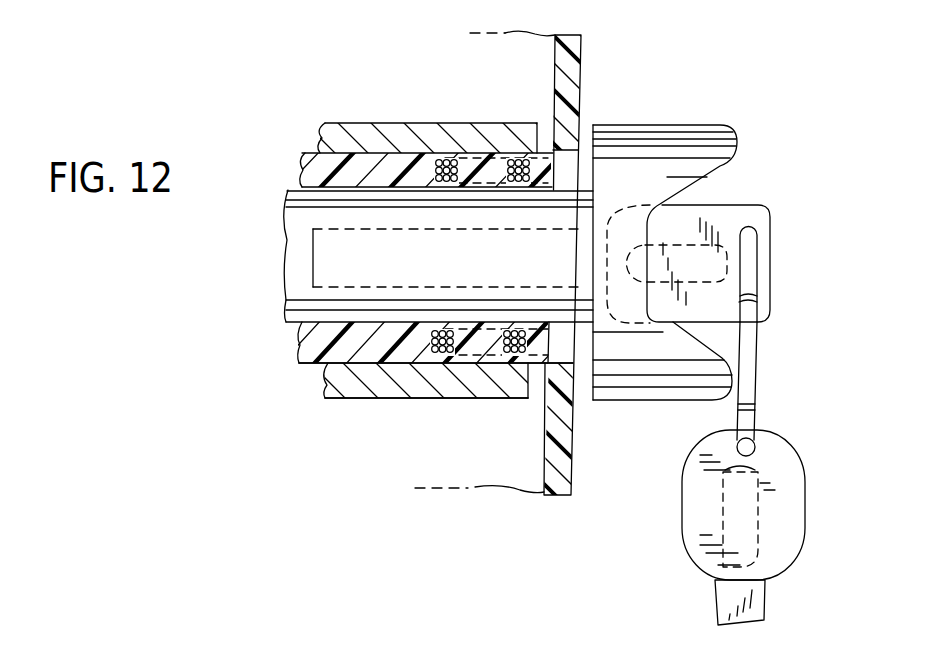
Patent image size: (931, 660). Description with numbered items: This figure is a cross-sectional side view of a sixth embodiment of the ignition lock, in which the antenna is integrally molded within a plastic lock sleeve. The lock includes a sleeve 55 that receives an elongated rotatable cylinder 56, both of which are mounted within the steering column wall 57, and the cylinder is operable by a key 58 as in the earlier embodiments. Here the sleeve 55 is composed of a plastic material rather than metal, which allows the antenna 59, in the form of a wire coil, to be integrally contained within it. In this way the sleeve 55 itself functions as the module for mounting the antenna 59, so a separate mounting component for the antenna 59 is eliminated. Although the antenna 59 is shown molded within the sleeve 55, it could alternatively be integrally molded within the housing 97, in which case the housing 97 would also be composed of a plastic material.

The sleeve 55 is at (366, 165).
The elongated rotatable cylinder 56 is at (297, 257).
The steering column wall 57 is at (572, 93).
The key 58 is at (763, 212).
The antenna 59 is at (448, 160).
The housing 97 is at (392, 388).